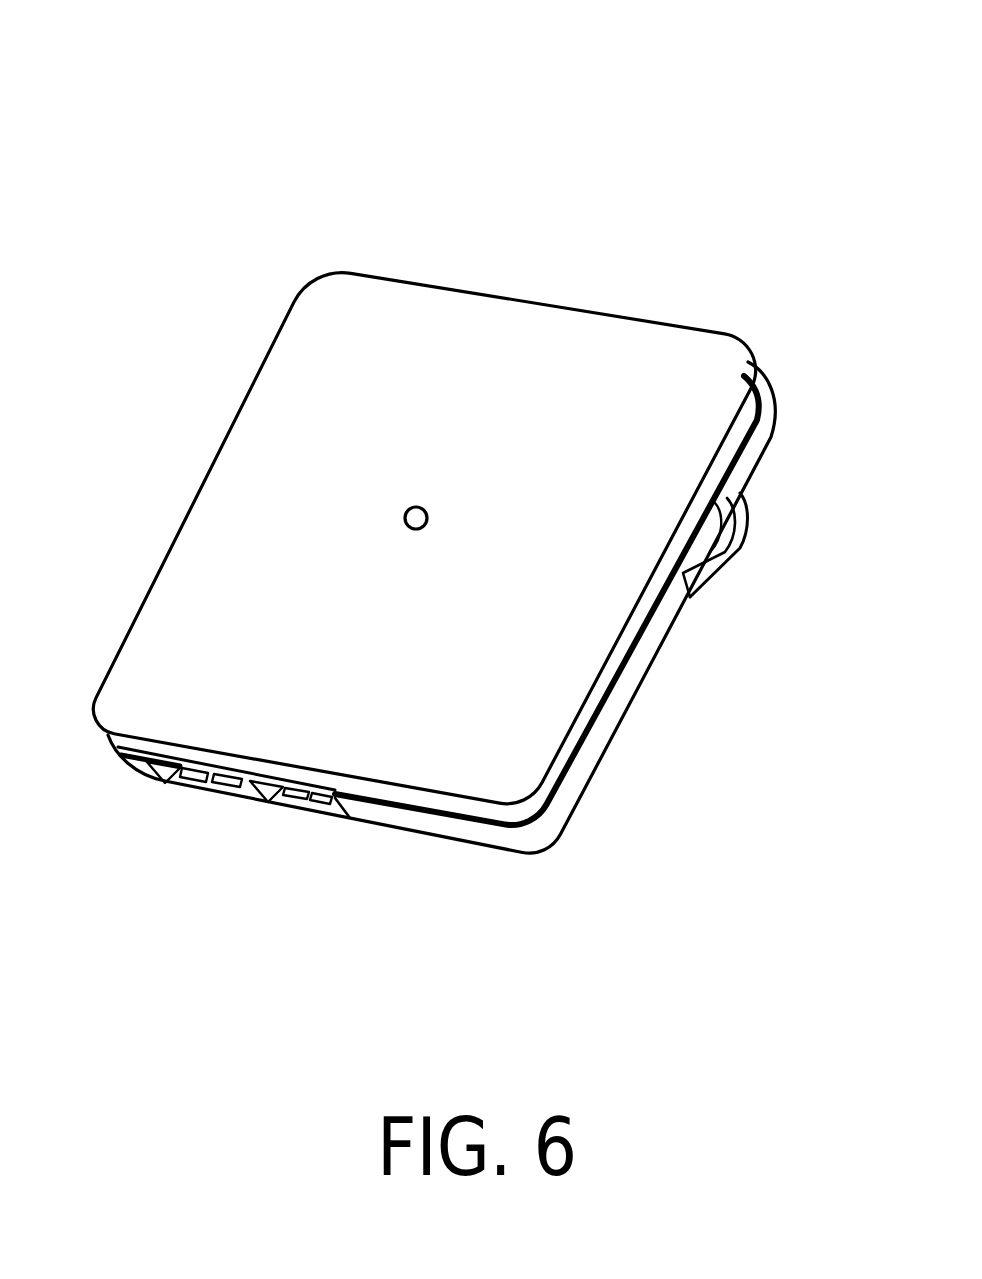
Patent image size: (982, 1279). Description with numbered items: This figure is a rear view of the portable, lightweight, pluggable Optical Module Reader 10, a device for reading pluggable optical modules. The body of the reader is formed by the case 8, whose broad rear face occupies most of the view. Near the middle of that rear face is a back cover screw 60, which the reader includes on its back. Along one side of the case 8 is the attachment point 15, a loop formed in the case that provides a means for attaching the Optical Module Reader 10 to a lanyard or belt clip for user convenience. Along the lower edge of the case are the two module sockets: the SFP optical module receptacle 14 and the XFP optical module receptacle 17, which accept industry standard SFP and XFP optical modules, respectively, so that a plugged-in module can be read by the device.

The Optical Module Reader 10 is at (754, 64).
The case 8 is at (645, 320).
The back cover screw 60 is at (423, 506).
The attachment point 15 is at (737, 542).
The XFP optical module receptacle 17 is at (182, 806).
The SFP optical module receptacle 14 is at (302, 838).